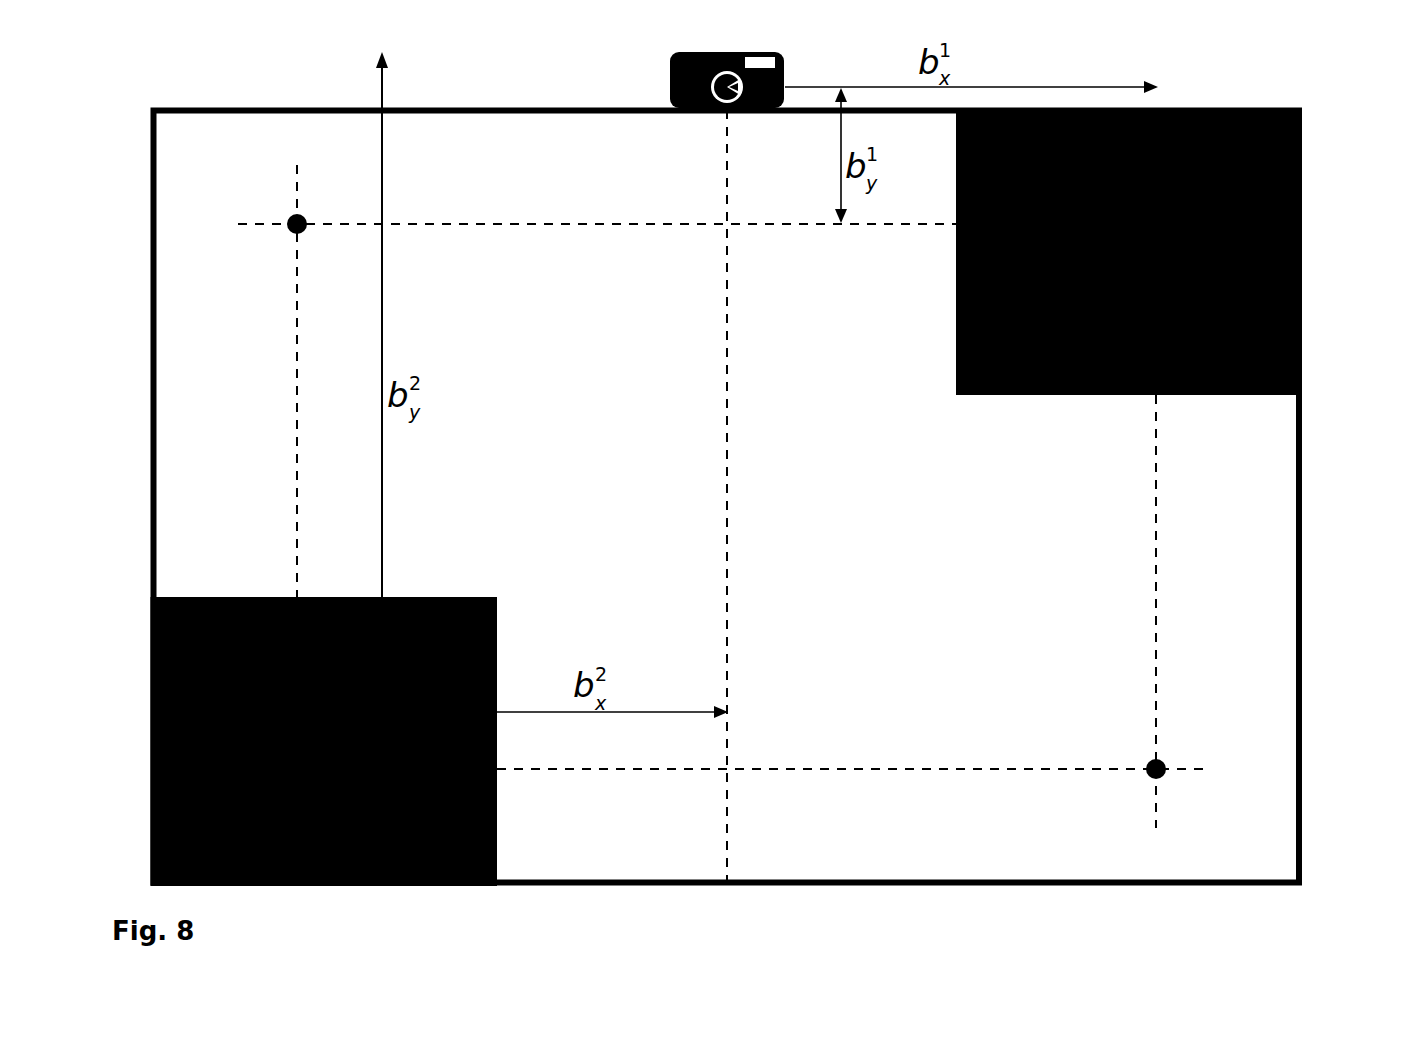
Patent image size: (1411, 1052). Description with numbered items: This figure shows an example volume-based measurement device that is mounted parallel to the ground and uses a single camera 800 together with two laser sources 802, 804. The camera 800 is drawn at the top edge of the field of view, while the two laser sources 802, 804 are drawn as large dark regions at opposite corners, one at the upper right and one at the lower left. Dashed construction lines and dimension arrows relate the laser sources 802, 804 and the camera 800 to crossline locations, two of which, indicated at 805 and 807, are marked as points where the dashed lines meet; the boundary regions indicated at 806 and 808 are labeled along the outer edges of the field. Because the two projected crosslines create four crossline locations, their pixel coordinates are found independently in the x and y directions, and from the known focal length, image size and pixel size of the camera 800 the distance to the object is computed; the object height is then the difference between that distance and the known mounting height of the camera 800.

The camera 800 is at (672, 55).
The laser source 802 is at (1302, 268).
The laser source 804 is at (405, 887).
The first corner point 805 is at (290, 213).
The display top edge 806 is at (1238, 107).
The second corner point 807 is at (1160, 781).
The display left edge 808 is at (151, 852).